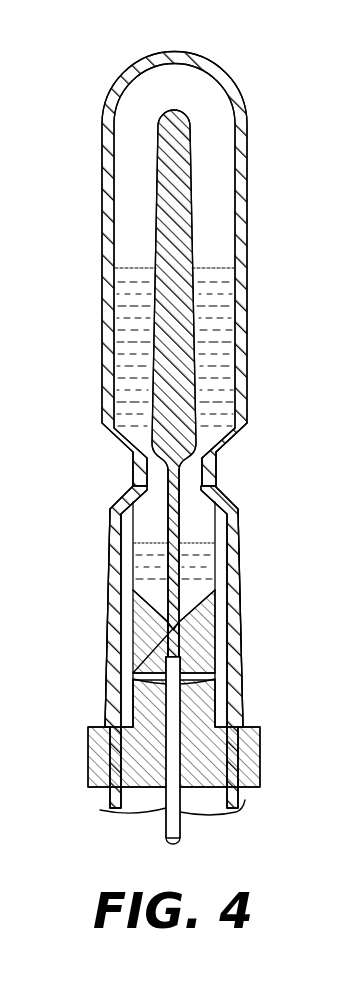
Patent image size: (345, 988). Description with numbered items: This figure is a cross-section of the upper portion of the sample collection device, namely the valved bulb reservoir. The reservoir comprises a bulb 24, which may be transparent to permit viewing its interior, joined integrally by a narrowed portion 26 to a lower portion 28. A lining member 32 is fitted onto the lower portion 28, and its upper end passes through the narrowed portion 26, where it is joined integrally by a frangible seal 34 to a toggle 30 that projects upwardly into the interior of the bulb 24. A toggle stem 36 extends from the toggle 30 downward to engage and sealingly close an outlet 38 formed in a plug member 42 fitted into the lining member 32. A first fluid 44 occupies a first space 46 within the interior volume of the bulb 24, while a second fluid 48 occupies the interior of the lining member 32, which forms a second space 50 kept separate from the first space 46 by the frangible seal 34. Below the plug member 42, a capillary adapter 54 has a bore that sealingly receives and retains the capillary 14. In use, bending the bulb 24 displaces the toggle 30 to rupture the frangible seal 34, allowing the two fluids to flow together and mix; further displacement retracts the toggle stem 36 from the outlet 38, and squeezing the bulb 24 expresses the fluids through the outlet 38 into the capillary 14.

The capillary 14 is at (178, 828).
The bulb 24 is at (238, 90).
The narrowed portion 26 is at (212, 473).
The lower portion 28 is at (238, 608).
The toggle 30 is at (185, 182).
The lining member 32 is at (133, 536).
The frangible seal 34 is at (207, 434).
The toggle stem 36 is at (185, 527).
The outlet 38 is at (170, 622).
The plug member 42 is at (203, 640).
The first fluid 44 is at (213, 330).
The first space 46 is at (151, 131).
The second fluid 48 is at (200, 572).
The second space 50 is at (161, 489).
The capillary adapter 54 is at (208, 740).